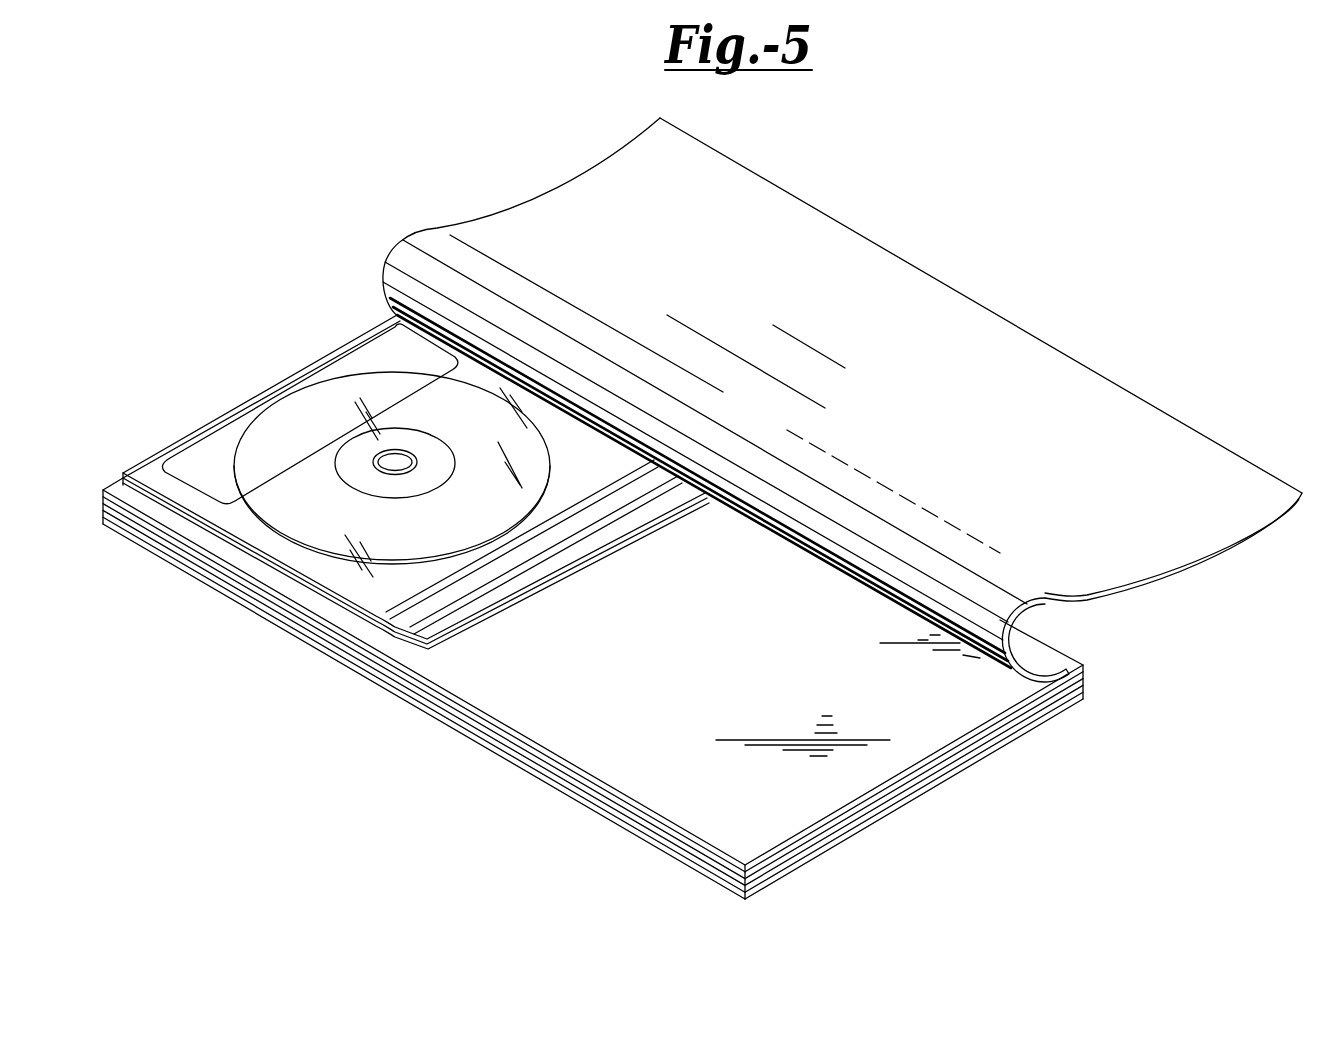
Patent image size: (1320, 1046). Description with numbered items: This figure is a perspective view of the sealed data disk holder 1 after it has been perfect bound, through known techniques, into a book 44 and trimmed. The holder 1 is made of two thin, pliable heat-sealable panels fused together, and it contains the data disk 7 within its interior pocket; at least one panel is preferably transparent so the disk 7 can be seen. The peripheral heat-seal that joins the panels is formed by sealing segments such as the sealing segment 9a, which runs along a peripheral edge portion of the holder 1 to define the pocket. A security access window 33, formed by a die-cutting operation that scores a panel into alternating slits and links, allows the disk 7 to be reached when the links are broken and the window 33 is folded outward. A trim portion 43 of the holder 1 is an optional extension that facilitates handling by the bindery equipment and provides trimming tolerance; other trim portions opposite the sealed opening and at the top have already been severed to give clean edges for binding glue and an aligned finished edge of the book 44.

The data disk holder 1 is at (645, 537).
The book 44 is at (365, 320).
The sealing segment 9a is at (212, 422).
The security access window 33 is at (297, 462).
The data disk 7 is at (553, 432).
The trim portion 43 is at (547, 536).